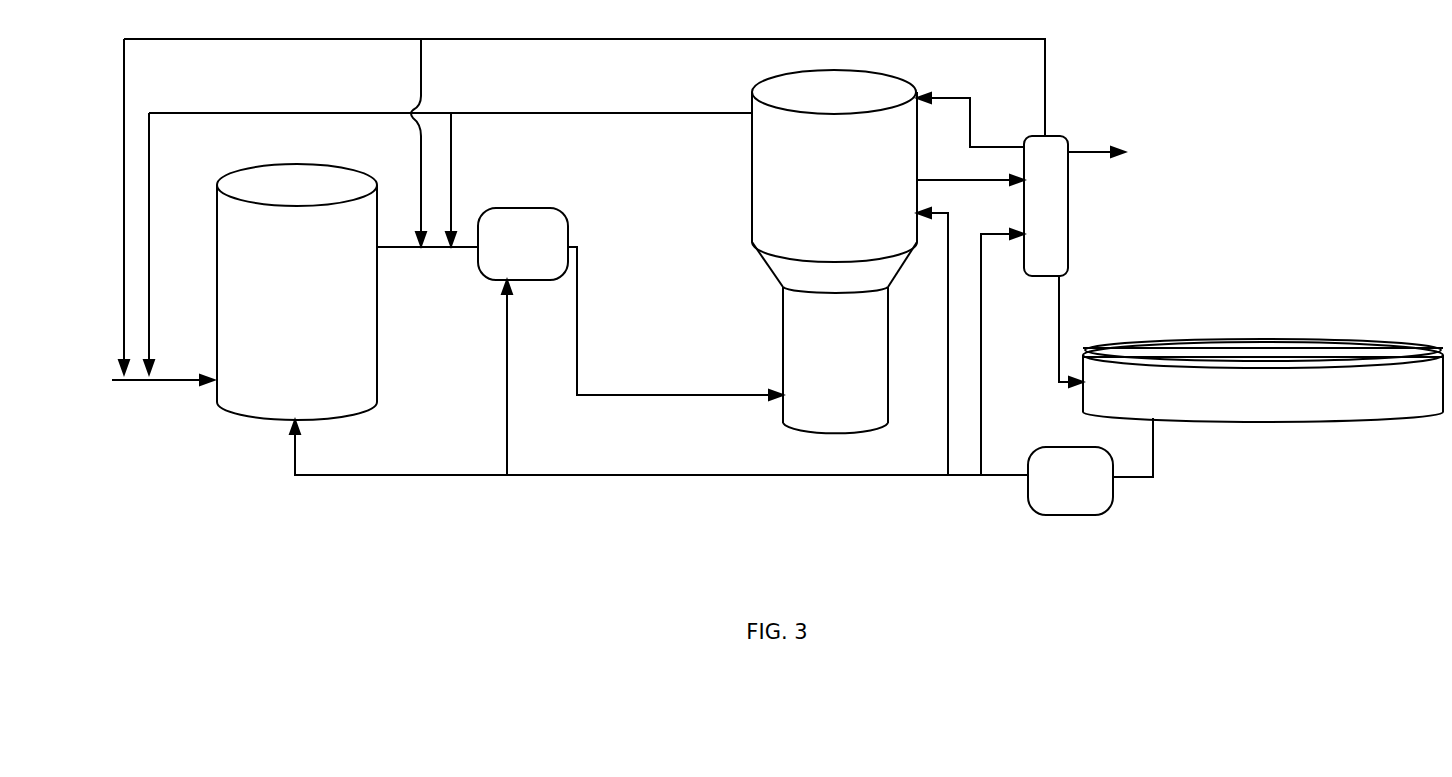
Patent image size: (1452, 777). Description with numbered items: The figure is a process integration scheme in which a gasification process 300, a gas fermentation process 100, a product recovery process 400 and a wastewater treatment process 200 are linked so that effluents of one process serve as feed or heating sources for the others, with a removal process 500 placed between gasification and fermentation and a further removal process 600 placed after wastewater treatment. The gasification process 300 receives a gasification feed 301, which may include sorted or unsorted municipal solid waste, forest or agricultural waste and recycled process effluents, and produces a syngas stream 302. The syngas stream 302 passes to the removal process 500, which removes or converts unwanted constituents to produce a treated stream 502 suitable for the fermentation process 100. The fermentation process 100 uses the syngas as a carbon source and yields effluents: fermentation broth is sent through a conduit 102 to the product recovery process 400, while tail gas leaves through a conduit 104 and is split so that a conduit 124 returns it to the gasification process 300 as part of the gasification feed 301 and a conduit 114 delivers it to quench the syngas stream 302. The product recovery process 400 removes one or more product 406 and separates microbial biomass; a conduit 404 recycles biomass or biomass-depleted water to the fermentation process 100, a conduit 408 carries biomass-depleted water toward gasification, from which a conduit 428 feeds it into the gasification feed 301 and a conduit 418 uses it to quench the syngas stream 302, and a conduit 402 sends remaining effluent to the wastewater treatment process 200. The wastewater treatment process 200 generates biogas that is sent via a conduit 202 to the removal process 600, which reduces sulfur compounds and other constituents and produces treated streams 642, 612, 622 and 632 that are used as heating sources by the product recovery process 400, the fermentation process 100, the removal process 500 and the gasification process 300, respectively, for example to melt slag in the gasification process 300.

The gas fermentation process 100 is at (834, 251).
The wastewater treatment process 200 is at (1263, 380).
The gasification process 300 is at (297, 292).
The product recovery process 400 is at (1046, 206).
The removal process 500 is at (523, 244).
The removal process 600 is at (1070, 481).
The conduit 102 is at (970, 169).
The conduit 104 is at (450, 98).
The conduit 114 is at (471, 179).
The conduit 124 is at (168, 243).
The conduit 202 is at (1155, 447).
The gasification feed 301 is at (142, 378).
The syngas stream 302 is at (427, 262).
The conduit 402 is at (1080, 331).
The conduit 404 is at (970, 105).
The product 406 is at (1119, 143).
The conduit 408 is at (584, 71).
The conduit 418 is at (401, 142).
The conduit 428 is at (102, 206).
The treated stream 502 is at (656, 323).
The treated stream 612 is at (924, 341).
The treated stream 622 is at (486, 377).
The treated stream 632 is at (638, 447).
The treated stream 642 is at (1003, 352).